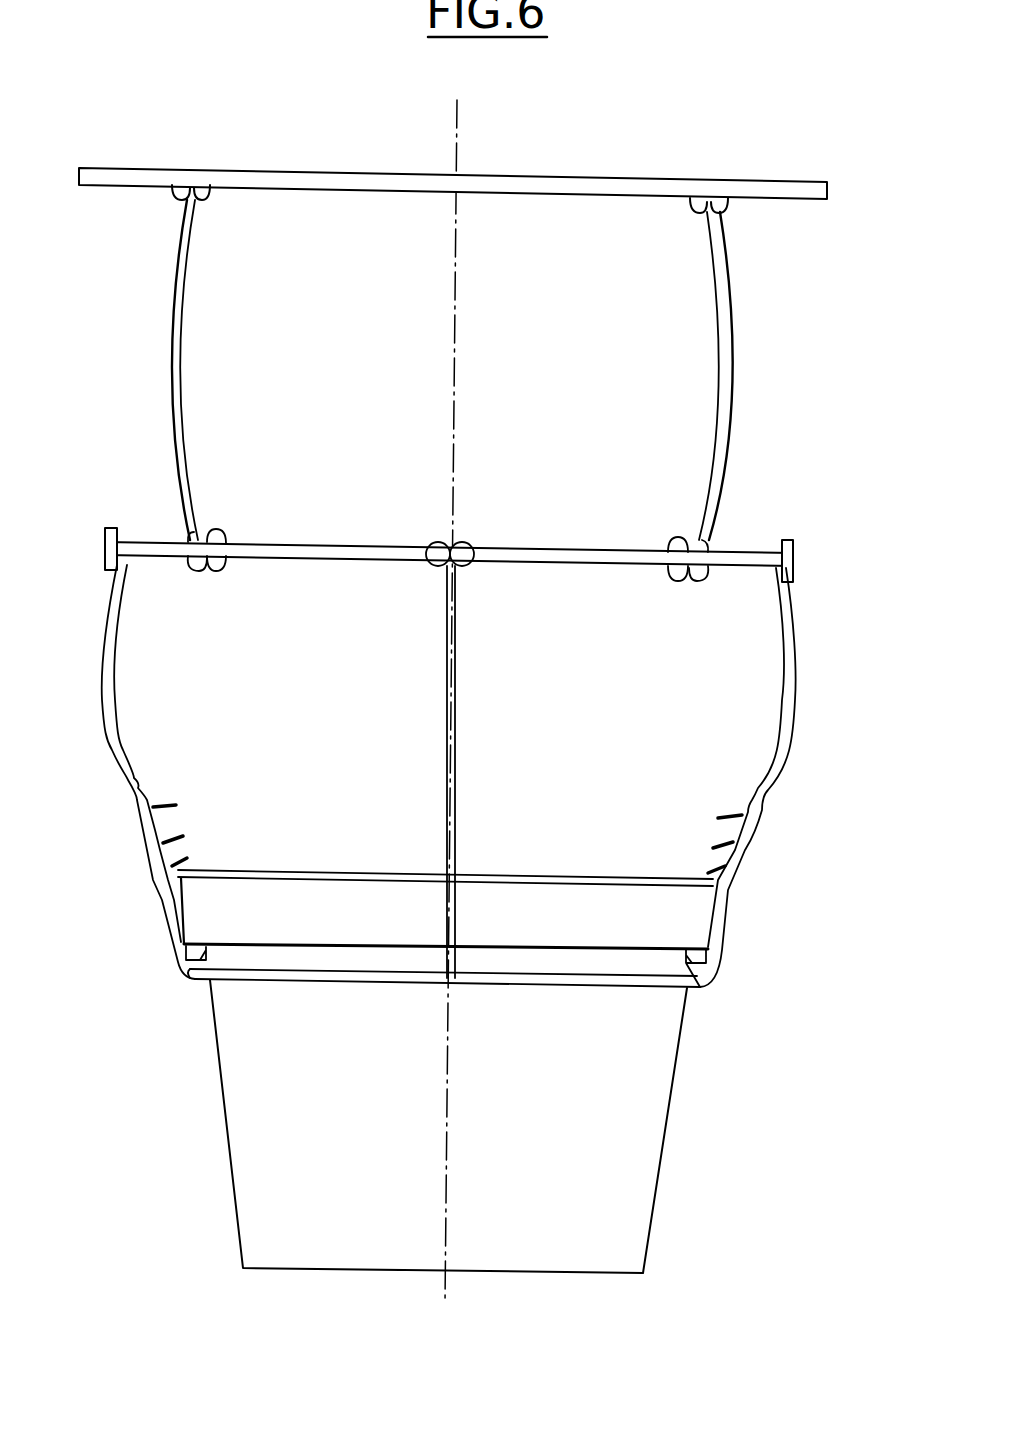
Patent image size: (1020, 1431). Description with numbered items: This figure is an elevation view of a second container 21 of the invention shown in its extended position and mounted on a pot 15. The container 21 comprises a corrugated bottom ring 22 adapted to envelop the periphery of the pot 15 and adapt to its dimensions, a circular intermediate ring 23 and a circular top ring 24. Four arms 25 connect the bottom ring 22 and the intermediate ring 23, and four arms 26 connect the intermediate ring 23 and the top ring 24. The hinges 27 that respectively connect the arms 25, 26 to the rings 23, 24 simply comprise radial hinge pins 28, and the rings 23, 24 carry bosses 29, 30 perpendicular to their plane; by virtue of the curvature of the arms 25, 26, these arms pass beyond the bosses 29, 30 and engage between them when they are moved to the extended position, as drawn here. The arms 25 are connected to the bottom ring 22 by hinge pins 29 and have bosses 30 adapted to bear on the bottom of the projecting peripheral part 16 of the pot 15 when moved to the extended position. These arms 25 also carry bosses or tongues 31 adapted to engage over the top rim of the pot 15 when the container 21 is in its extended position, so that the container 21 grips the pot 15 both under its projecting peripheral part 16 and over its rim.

The pot 15 is at (633, 1098).
The projecting peripheral part 16 is at (264, 923).
The container 21 is at (768, 430).
The corrugated bottom ring 22 is at (306, 977).
The circular intermediate ring 23 is at (556, 556).
The circular top ring 24 is at (575, 185).
The arms 25 is at (116, 733).
The arms 26 is at (182, 408).
The hinges 27 is at (446, 543).
The radial hinge pins 28 is at (690, 582).
The bosses 29 is at (178, 192).
The bosses 30 is at (204, 198).
The bosses or tongues 31 is at (178, 850).